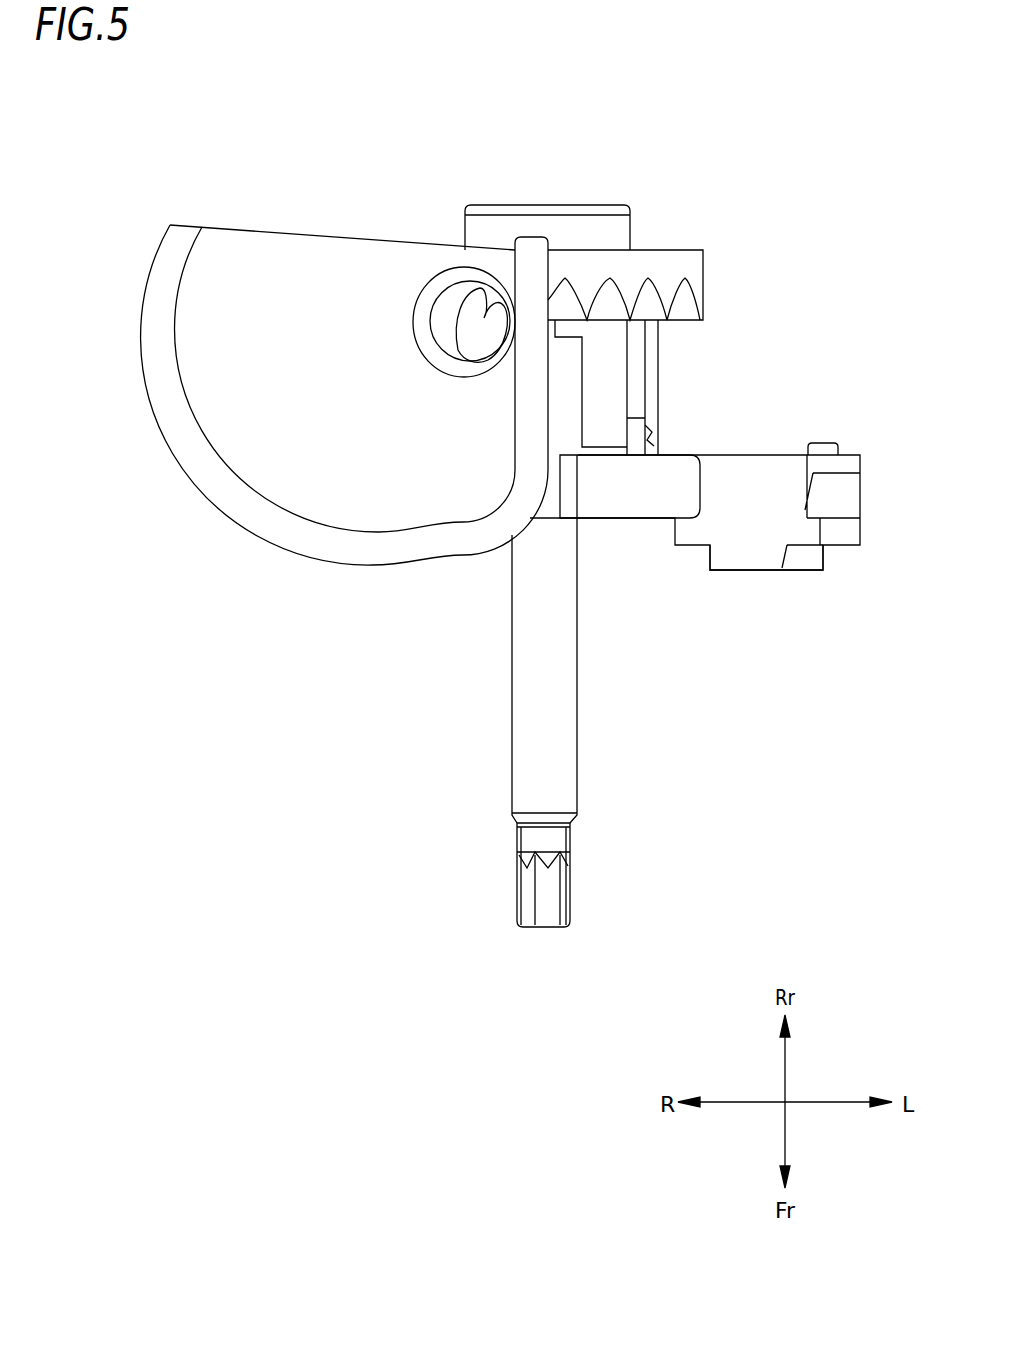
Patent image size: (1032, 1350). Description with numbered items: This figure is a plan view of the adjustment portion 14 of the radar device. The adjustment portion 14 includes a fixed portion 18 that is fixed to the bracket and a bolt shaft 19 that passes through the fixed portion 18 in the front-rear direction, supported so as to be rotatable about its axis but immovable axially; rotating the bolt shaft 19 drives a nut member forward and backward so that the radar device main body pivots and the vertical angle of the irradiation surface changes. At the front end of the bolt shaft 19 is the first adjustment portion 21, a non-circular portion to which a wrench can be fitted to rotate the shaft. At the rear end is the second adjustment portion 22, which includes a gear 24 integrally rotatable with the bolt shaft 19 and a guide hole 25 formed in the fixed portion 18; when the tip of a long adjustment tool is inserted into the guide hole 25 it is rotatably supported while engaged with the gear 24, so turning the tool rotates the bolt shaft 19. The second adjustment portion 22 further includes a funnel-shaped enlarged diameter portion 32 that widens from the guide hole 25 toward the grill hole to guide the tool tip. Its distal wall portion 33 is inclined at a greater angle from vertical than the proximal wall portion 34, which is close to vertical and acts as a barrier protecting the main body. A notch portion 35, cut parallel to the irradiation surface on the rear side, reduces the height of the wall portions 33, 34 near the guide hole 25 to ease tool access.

The adjustment portion 14 is at (753, 394).
The fixed portion 18 is at (765, 560).
The bolt shaft 19 is at (580, 693).
The first adjustment portion 21 is at (573, 895).
The second adjustment portion 22 is at (488, 265).
The gear 24 is at (705, 258).
The guide hole 25 is at (450, 303).
The enlarged diameter portion 32 is at (250, 527).
The wall portion 33 is at (145, 372).
The wall portion 34 is at (510, 400).
The notch portion 35 is at (312, 235).